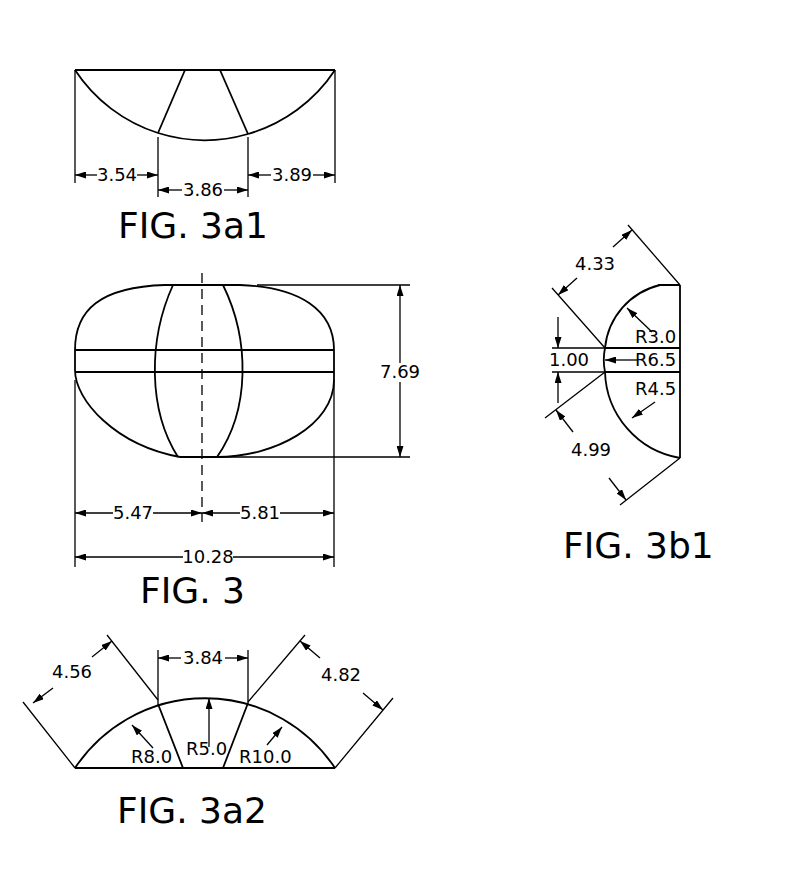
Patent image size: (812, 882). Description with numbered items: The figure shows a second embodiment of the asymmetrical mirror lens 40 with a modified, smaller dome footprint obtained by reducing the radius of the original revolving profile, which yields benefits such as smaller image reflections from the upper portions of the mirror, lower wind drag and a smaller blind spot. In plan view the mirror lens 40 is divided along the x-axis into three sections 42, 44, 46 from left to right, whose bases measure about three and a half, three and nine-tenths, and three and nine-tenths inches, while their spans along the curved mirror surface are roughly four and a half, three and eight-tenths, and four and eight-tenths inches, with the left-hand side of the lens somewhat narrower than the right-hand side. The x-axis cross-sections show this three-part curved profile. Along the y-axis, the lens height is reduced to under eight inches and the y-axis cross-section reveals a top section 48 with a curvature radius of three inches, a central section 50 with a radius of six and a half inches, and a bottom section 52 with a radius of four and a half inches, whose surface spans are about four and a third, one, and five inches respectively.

In FIG. 3, the mirror lens 40 is at (113, 310).
In FIG. 3a1, the left section 42 is at (132, 92).
In FIG. 3, the left section 42 is at (113, 407).
In FIG. 3a1, the central section 44 is at (208, 92).
In FIG. 3, the central section 44 is at (188, 425).
In FIG. 3a1, the right section 46 is at (287, 92).
In FIG. 3, the right section 46 is at (253, 430).
In FIG. 3b1, the top section 48 is at (670, 307).
In FIG. 3b1, the central section 50 is at (680, 367).
In FIG. 3b1, the bottom section 52 is at (673, 428).